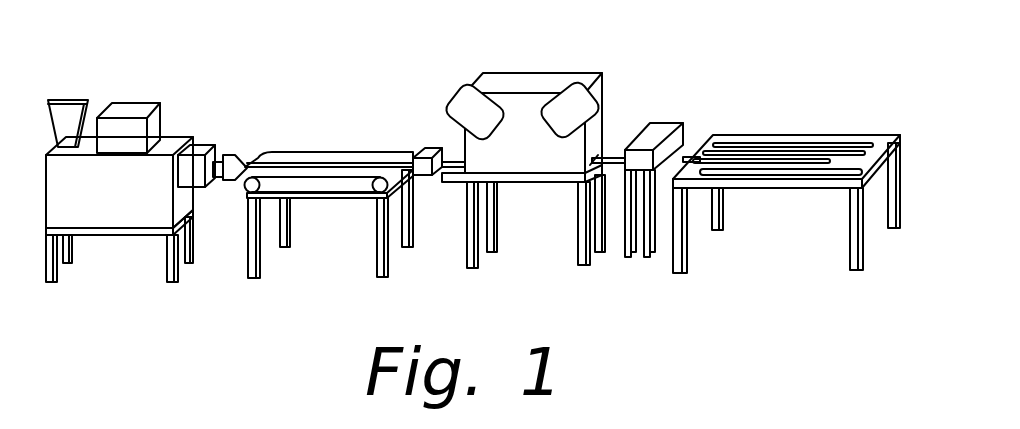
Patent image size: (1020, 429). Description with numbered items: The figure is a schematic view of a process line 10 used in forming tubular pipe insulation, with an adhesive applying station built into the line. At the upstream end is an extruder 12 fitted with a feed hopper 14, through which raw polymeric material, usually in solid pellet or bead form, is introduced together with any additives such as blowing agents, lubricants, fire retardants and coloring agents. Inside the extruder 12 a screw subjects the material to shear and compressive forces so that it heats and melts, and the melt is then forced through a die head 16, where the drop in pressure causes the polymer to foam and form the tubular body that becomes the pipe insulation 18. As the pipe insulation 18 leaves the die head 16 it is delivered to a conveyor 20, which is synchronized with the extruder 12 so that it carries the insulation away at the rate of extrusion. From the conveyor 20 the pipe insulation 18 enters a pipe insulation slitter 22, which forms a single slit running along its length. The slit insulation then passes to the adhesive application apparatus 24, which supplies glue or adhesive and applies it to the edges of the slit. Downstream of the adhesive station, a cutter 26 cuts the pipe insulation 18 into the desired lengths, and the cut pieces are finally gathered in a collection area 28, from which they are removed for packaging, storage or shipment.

The process line 10 is at (628, 32).
The extruder 12 is at (163, 163).
The feed hopper 14 is at (63, 112).
The die head 16 is at (235, 157).
The pipe insulation 18 is at (295, 165).
The conveyor 20 is at (325, 157).
The pipe insulation slitter 22 is at (435, 148).
The adhesive application apparatus 24 is at (523, 103).
The cutter 26 is at (663, 127).
The collection area 28 is at (840, 137).